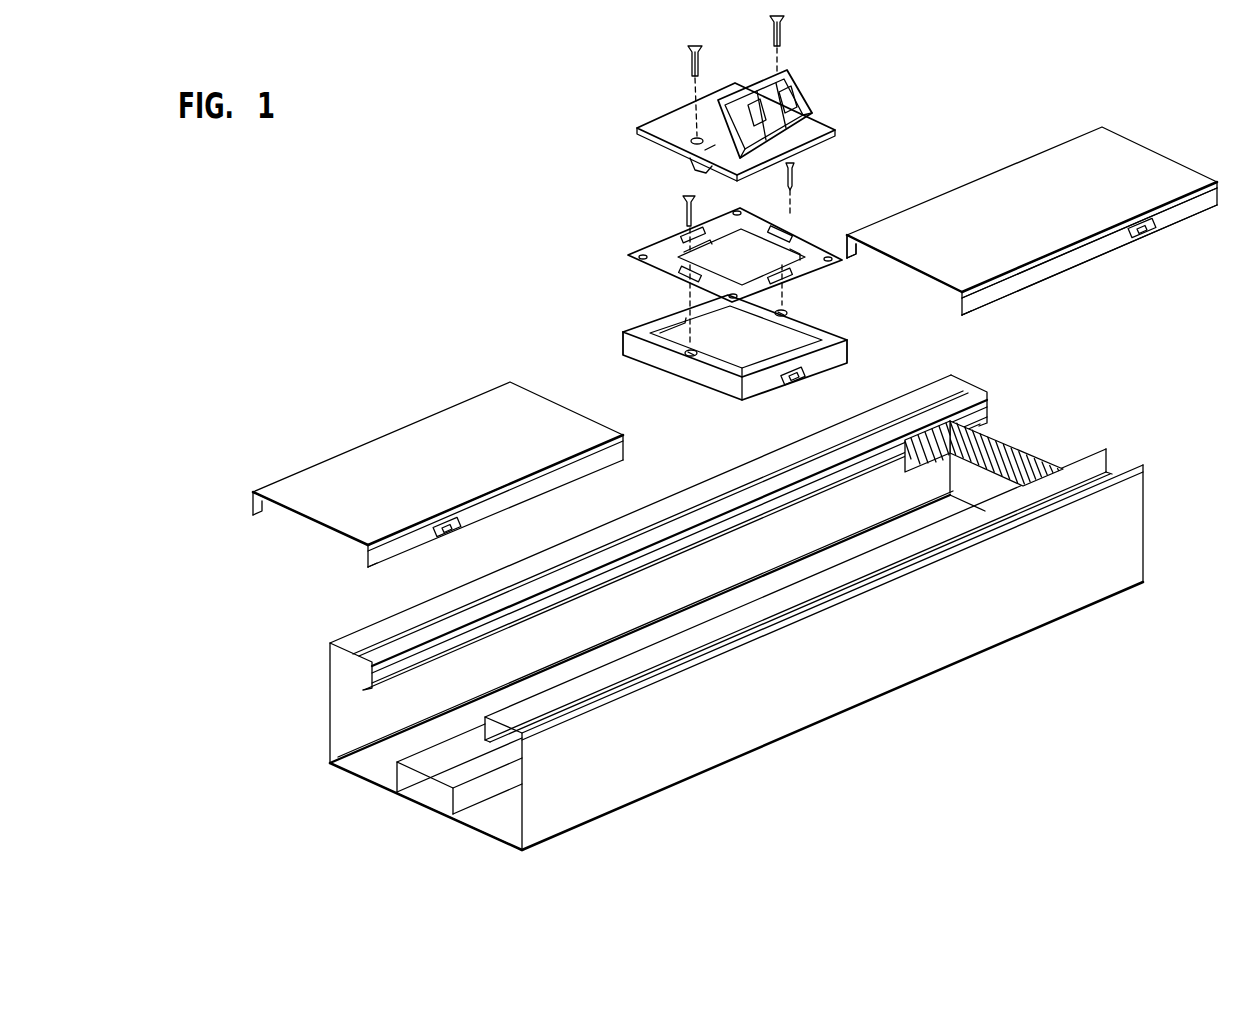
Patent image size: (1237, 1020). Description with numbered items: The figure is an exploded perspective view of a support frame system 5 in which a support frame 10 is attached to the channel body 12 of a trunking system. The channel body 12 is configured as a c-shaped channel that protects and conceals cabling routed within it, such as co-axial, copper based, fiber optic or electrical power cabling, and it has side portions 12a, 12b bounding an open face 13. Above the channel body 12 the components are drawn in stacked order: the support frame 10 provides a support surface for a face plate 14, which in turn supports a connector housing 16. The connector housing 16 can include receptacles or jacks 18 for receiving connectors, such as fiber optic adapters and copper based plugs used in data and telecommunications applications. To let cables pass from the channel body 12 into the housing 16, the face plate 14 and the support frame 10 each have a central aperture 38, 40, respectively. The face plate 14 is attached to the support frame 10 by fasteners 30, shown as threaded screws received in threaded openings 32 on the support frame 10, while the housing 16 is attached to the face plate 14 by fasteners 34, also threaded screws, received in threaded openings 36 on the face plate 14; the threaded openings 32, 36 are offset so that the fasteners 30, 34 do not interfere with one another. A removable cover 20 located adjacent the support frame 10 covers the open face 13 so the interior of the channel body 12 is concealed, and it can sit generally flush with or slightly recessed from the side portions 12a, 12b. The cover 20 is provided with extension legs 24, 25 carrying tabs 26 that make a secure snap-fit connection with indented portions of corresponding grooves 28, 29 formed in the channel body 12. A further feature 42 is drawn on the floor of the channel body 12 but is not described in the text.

The support frame system 5 is at (538, 176).
The support frame 10 is at (640, 330).
The channel body 12 is at (733, 485).
The side portion 12a is at (968, 390).
The side portion 12b is at (1110, 463).
The open face 13 is at (1015, 452).
The face plate 14 is at (660, 250).
The connector housing 16 is at (658, 130).
The receptacles or jacks 18 is at (748, 86).
The removable cover 20 is at (940, 208).
The extension leg 24 is at (252, 503).
The extension leg 25 is at (377, 557).
The tab 26 is at (455, 528).
The groove 28 is at (370, 688).
The groove 29 is at (486, 719).
The fastener 30 is at (792, 172).
The threaded opening 32 is at (786, 313).
The fastener 34 is at (692, 66).
The threaded opening 36 is at (757, 236).
The central aperture 38 is at (727, 245).
The central aperture 40 is at (735, 357).
The floor rail 42 is at (435, 798).